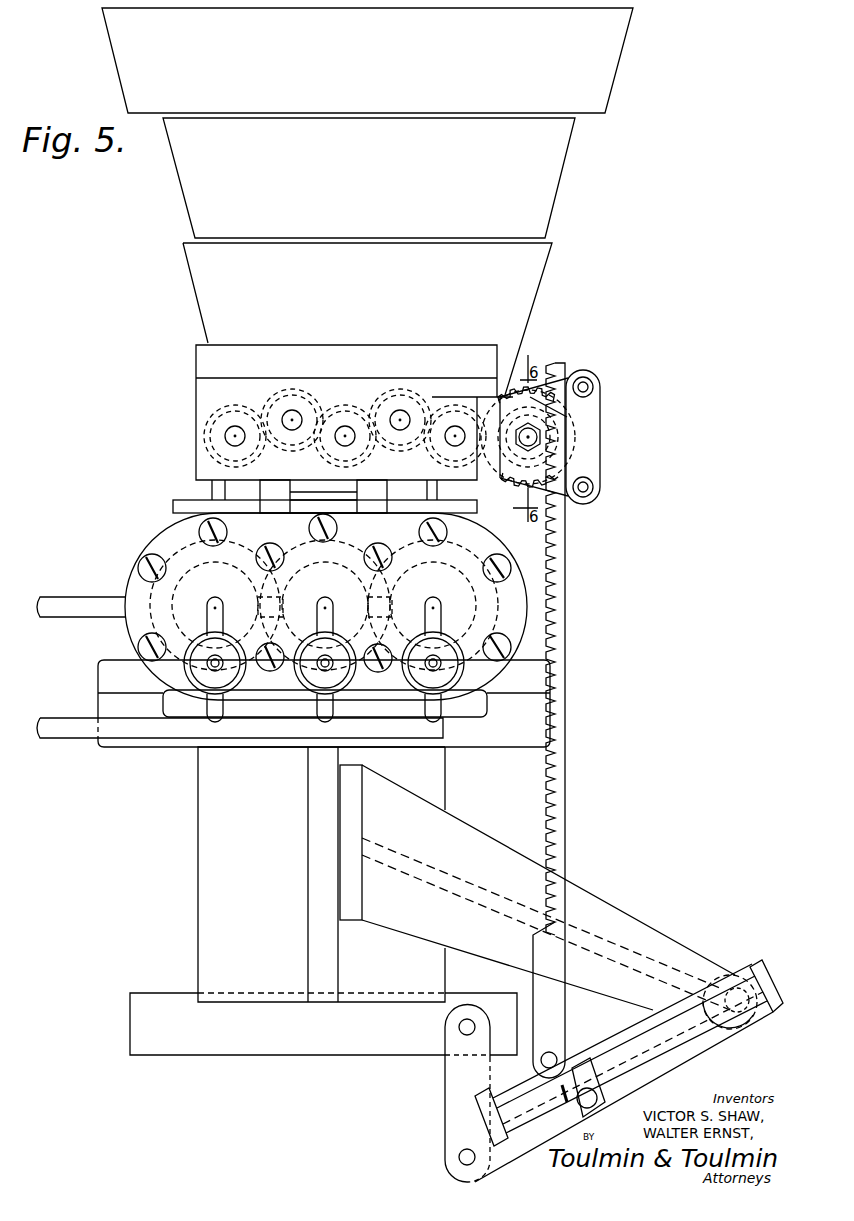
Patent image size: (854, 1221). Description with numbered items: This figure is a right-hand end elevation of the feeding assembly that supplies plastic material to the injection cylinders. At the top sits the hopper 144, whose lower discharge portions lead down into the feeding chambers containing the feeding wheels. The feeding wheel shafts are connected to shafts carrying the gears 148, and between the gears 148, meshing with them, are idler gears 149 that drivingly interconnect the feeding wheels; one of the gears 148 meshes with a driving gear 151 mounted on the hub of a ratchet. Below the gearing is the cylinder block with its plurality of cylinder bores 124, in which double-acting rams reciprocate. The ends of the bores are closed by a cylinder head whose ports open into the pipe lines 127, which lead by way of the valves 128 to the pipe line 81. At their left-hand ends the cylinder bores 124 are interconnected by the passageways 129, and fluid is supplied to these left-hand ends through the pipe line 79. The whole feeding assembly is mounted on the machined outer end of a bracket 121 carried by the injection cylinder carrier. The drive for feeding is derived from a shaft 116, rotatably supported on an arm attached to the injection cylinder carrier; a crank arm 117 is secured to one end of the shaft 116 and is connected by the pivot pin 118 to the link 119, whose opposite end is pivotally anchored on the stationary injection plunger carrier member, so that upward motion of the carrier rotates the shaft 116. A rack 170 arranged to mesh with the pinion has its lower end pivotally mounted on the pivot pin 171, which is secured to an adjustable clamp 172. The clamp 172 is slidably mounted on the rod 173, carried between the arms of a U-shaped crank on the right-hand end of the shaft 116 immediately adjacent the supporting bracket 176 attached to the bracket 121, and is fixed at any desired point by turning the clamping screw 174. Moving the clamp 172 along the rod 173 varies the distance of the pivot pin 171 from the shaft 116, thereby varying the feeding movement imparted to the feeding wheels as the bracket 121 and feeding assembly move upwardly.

The hopper 144 is at (190, 205).
The gears 148 is at (228, 413).
The idler gears 149 is at (270, 411).
The driving gear 151 is at (577, 410).
The rack 170 is at (565, 528).
The pivot pin 171 is at (548, 1052).
The cylinder bores 124 is at (277, 549).
The passageways 129 is at (323, 594).
The pipe lines 127 is at (207, 612).
The valves 128 is at (185, 673).
The pipe line 79 is at (69, 597).
The pipe line 81 is at (72, 714).
The bracket 121 is at (197, 866).
The supporting bracket 176 is at (586, 895).
The crank arm 117 is at (468, 1138).
The rod 173 is at (636, 1040).
The adjustable clamp 172 is at (572, 1057).
The clamping screw 174 is at (588, 1088).
The shaft 116 is at (735, 975).
The link 119 is at (447, 1077).
The pivot pin 118 is at (459, 1152).